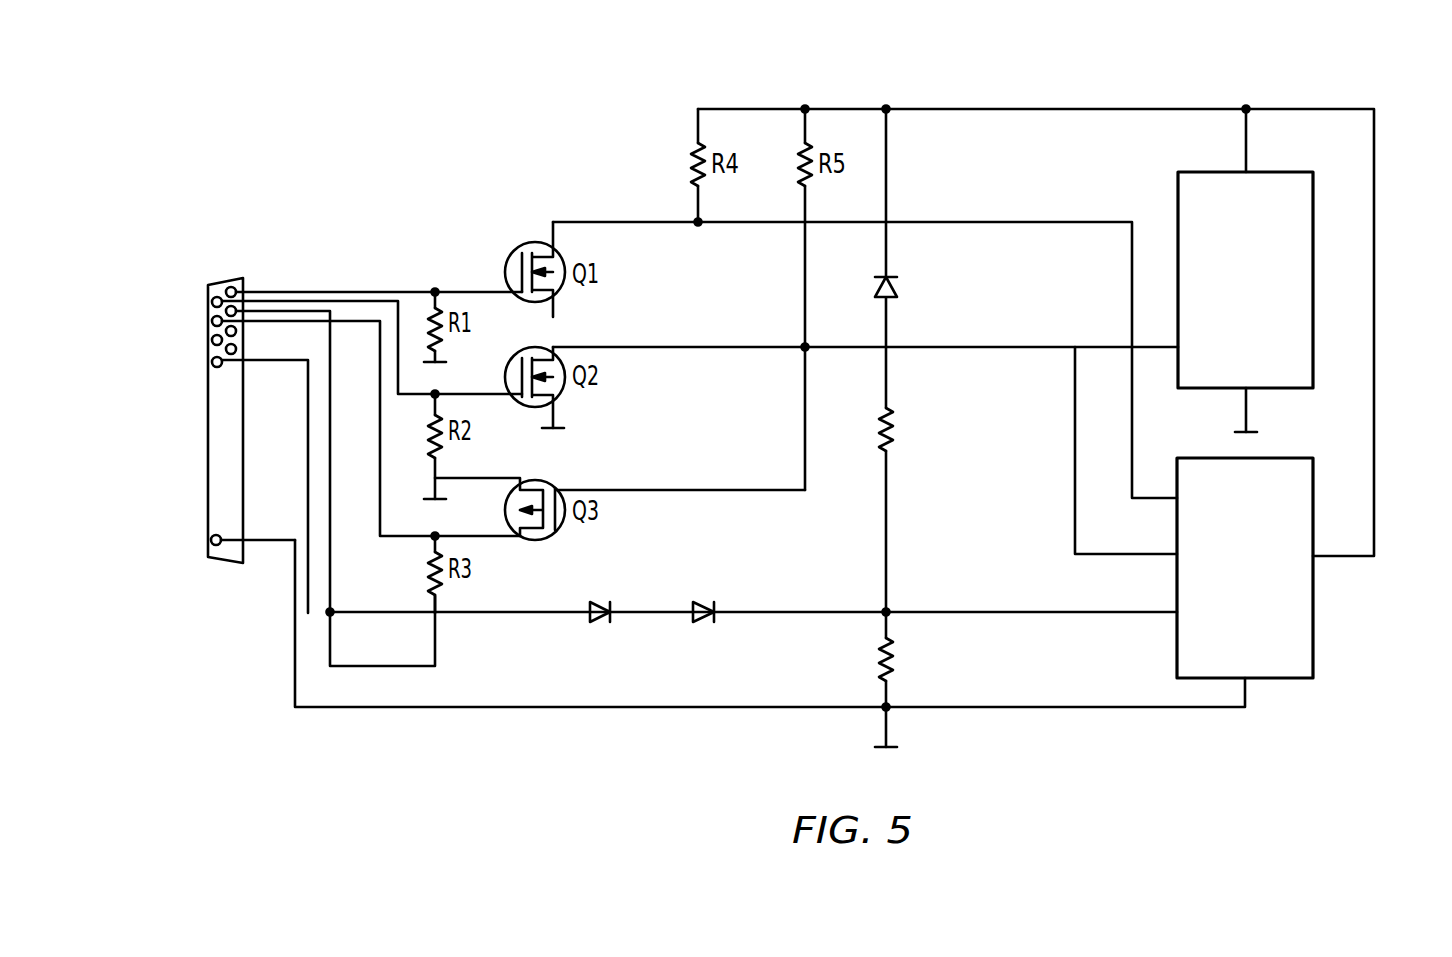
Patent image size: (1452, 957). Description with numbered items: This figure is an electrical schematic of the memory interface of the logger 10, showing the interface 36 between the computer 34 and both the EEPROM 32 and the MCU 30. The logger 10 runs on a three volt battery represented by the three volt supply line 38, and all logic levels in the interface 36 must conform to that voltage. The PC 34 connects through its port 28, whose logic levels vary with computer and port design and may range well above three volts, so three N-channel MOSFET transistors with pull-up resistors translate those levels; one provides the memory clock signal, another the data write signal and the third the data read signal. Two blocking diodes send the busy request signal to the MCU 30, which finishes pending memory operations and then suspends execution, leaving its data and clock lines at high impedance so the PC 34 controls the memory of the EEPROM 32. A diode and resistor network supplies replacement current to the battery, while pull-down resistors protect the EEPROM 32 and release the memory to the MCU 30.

The logger 10 is at (1030, 725).
The serial port 28 is at (194, 449).
The MCU 30 is at (1330, 623).
The EEPROM 32 is at (1327, 310).
The computer 34 is at (226, 570).
The interface 36 is at (440, 720).
The 3V line 38 is at (1160, 108).